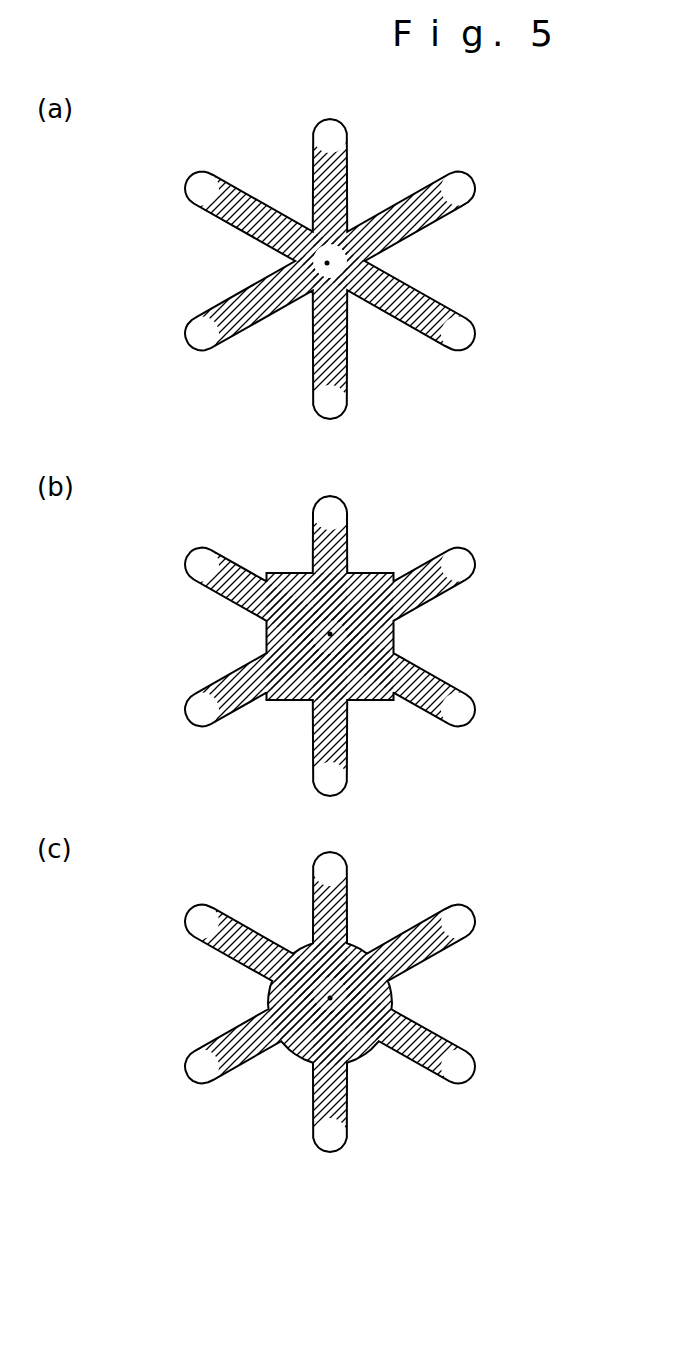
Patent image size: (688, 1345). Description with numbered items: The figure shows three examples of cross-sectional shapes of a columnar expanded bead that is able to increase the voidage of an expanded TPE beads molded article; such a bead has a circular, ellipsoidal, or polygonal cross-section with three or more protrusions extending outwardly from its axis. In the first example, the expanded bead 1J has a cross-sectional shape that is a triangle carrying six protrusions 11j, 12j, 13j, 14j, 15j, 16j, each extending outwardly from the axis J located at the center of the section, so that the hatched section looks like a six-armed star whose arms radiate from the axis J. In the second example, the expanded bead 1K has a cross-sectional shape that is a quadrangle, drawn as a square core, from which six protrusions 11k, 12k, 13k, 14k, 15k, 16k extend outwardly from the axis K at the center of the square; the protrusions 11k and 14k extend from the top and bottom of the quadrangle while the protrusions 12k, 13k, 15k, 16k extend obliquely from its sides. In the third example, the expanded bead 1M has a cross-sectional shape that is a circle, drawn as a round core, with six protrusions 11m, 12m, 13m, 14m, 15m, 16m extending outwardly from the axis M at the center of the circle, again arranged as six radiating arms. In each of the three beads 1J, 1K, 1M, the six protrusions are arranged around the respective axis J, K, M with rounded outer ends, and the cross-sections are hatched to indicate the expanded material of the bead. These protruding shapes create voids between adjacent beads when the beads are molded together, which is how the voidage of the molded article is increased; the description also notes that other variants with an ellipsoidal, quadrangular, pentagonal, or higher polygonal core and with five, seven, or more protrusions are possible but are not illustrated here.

The expanded bead 1J is at (481, 176).
The protrusion 11j is at (335, 132).
The protrusion 12j is at (458, 190).
The protrusion 13j is at (458, 328).
The protrusion 14j is at (336, 393).
The protrusion 15j is at (194, 337).
The protrusion 16j is at (194, 198).
The axis J is at (327, 263).
The expanded bead 1K is at (478, 548).
The protrusion 11k is at (337, 511).
The protrusion 12k is at (458, 567).
The protrusion 13k is at (458, 705).
The protrusion 14k is at (336, 768).
The protrusion 15k is at (194, 716).
The protrusion 16k is at (194, 577).
The axis K is at (330, 634).
The expanded bead 1M is at (480, 908).
The protrusion 11m is at (337, 866).
The protrusion 12m is at (458, 923).
The protrusion 13m is at (458, 1060).
The protrusion 14m is at (337, 1123).
The protrusion 15m is at (192, 1065).
The protrusion 16m is at (192, 932).
The axis M is at (330, 998).